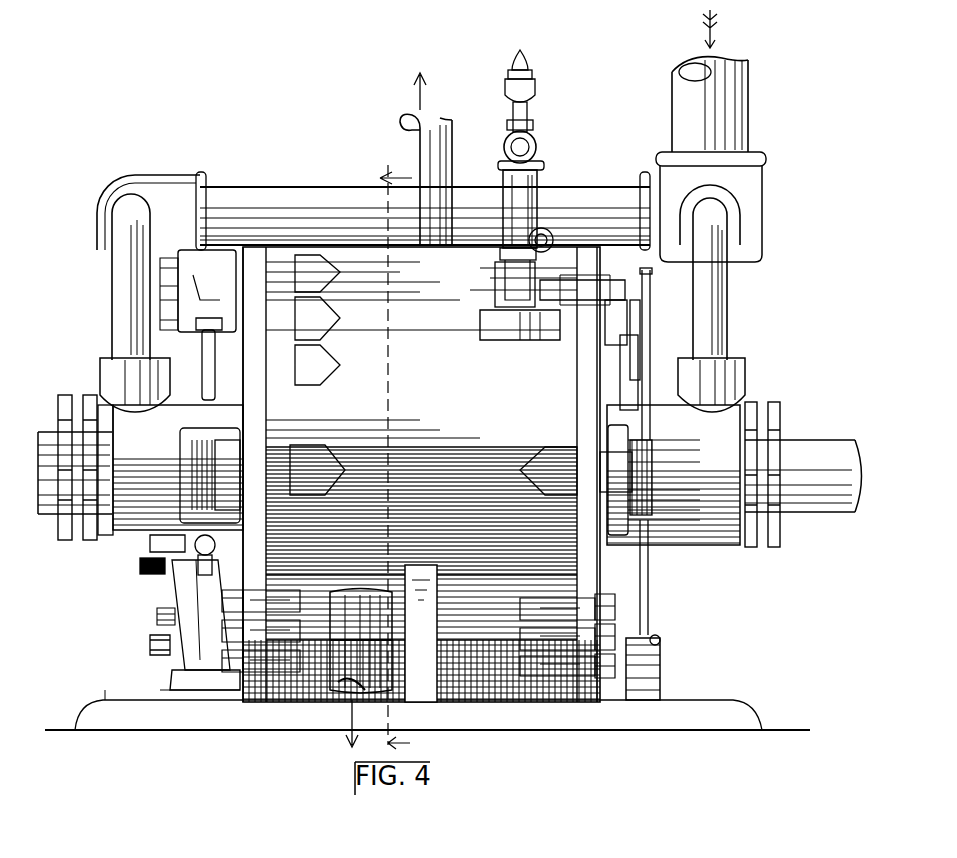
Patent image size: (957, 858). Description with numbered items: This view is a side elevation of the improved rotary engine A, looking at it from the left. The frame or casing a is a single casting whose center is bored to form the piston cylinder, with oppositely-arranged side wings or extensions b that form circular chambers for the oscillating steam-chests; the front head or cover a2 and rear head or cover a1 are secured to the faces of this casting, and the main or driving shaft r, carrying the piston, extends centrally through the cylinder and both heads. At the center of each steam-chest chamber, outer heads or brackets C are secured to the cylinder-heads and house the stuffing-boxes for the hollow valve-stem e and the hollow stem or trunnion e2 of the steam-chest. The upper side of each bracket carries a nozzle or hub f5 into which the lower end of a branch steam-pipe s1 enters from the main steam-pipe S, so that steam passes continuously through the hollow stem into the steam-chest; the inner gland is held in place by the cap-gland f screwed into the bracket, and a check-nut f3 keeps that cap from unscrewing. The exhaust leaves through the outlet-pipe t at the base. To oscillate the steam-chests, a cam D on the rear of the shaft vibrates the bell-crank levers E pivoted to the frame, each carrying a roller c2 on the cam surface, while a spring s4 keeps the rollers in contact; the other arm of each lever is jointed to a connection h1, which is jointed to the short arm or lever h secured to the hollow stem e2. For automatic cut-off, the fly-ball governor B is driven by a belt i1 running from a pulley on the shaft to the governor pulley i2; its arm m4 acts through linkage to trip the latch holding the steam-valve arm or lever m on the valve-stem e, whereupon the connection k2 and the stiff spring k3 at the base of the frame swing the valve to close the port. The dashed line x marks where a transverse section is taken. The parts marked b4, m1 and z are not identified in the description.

The rotary engine A is at (154, 414).
The fly-ball governor B is at (532, 110).
The stuffing-box bracket C is at (426, 475).
The cam D is at (140, 565).
The bell-crank lever E is at (162, 593).
The main steam-pipe S is at (678, 118).
The branch steam-pipe s1 is at (112, 272).
The frame or casing a is at (112, 700).
The rear head or cover a1 is at (255, 378).
The front head or cover a2 is at (585, 383).
The side wing or extension b is at (421, 474).
The bolt b4 is at (150, 650).
The roller c2 is at (150, 545).
The hollow valve-stem e is at (660, 470).
The hollow stem or trunnion e2 is at (188, 452).
The cap-gland f is at (58, 525).
The check-nut f3 is at (98, 535).
The nozzle or hub f5 is at (100, 366).
The arm or lever h is at (222, 471).
The connection h1 is at (202, 365).
The belt i1 is at (642, 340).
The governor pulley i2 is at (652, 282).
The connection k2 is at (648, 590).
The stiff spring k3 is at (648, 668).
The steam-valve arm or lever m is at (600, 455).
The collar m1 is at (645, 500).
The arm m4 is at (620, 315).
The main or driving shaft r is at (46, 440).
The spring s4 is at (214, 556).
The outlet-pipe t is at (325, 698).
The section line x is at (395, 457).
The pipe z is at (400, 140).